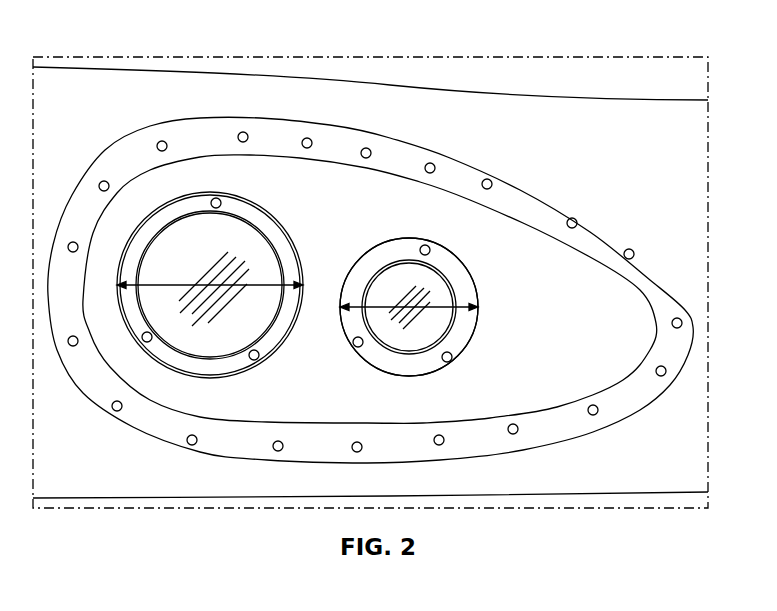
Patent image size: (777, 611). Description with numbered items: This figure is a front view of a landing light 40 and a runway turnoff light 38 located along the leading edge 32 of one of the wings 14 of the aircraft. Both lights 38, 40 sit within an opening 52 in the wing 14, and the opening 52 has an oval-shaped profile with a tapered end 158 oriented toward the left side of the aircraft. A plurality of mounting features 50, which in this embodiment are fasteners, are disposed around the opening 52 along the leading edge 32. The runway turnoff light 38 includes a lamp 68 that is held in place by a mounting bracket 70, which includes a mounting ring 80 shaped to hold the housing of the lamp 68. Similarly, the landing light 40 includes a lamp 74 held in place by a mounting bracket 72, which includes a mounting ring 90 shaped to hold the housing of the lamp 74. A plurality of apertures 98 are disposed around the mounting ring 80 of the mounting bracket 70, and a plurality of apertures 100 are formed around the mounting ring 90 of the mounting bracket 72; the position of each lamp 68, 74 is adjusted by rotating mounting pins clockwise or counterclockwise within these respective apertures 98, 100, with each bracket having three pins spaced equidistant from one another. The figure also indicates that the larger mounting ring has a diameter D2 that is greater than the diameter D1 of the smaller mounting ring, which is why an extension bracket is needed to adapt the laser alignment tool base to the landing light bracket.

The wing 14 is at (586, 32).
The leading edge 32 is at (477, 115).
The runway turnoff light 38 is at (492, 304).
The landing light 40 is at (292, 210).
The mounting feature 50 is at (632, 251).
The opening 52 is at (546, 232).
The lamp 68 is at (441, 303).
The mounting bracket 70 is at (455, 249).
The mounting bracket 72 is at (232, 193).
The lamp 74 is at (258, 262).
The mounting ring 80 is at (470, 333).
The mounting ring 90 is at (268, 340).
The apertures 98 is at (425, 246).
The apertures 100 is at (216, 198).
The tapered end 158 is at (616, 450).
The diameter D1 is at (380, 307).
The diameter D2 is at (168, 285).